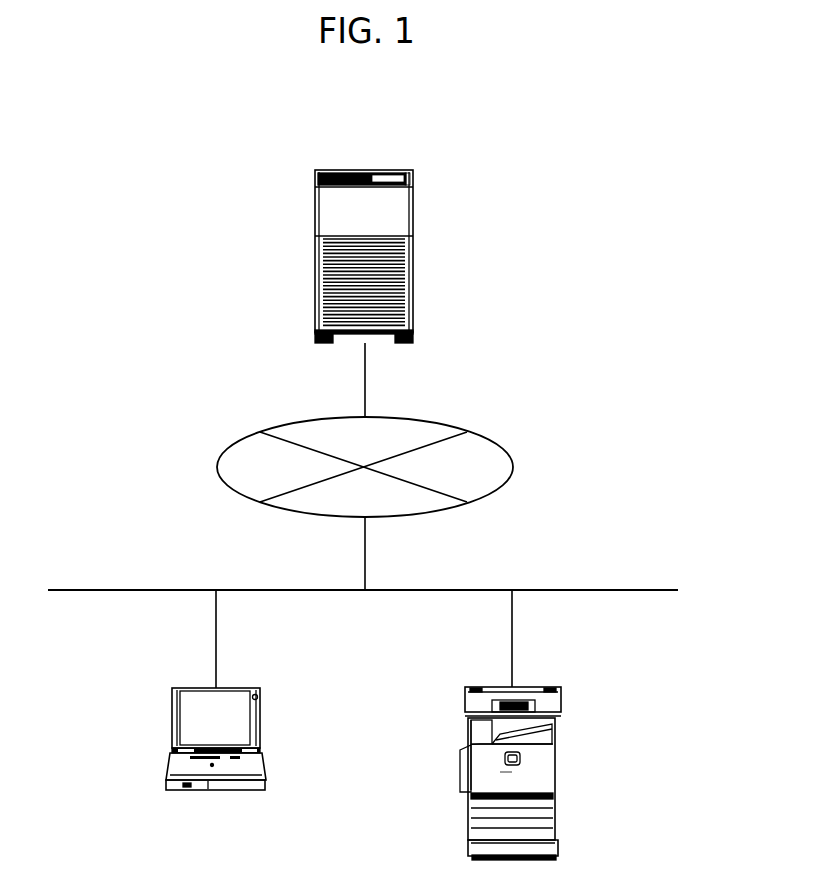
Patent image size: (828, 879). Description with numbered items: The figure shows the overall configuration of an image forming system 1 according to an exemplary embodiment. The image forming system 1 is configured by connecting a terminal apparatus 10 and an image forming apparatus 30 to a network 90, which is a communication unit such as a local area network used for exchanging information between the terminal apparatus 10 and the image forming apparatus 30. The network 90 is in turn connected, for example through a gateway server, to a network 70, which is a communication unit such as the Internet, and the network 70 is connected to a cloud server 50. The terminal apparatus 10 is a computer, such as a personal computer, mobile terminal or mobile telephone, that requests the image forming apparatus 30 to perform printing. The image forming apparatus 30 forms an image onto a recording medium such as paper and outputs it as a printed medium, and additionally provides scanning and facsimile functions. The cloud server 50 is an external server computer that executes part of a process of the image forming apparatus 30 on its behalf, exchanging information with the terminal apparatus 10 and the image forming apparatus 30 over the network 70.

The image forming system 1 is at (556, 190).
The terminal apparatus 10 is at (240, 686).
The image forming apparatus 30 is at (535, 686).
The cloud server 50 is at (388, 168).
The network 70 is at (463, 427).
The network 90 is at (644, 589).